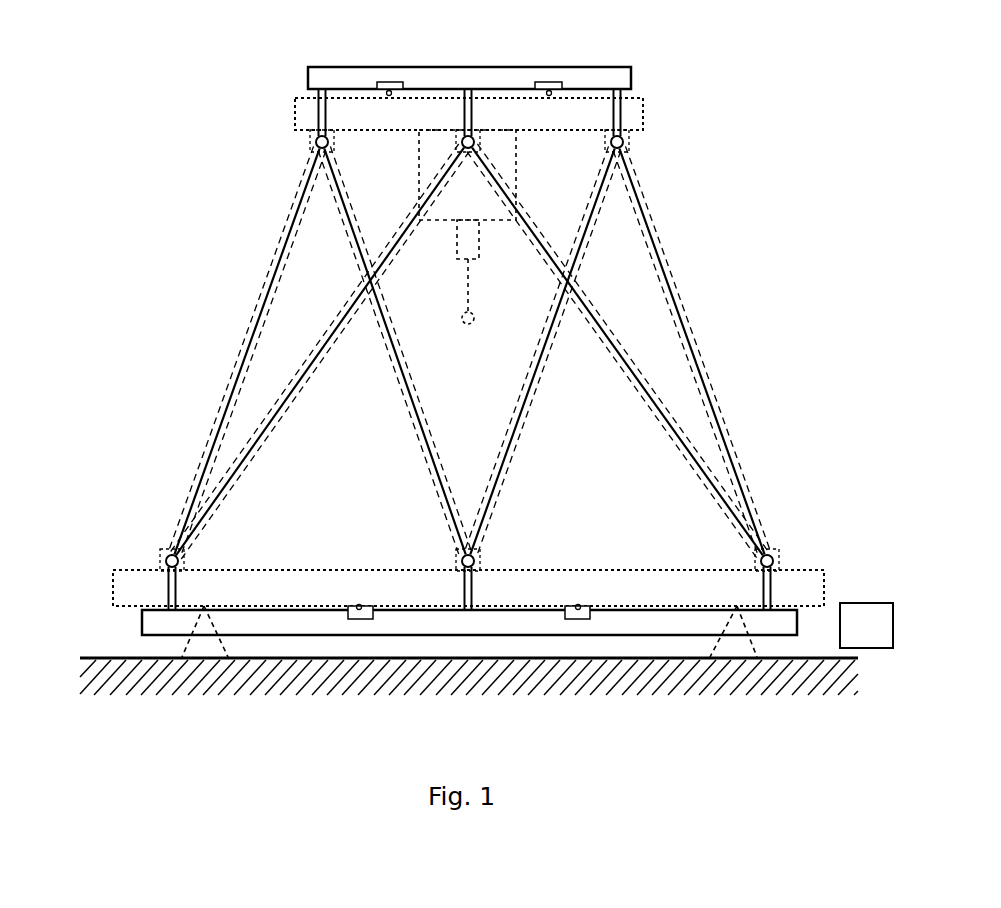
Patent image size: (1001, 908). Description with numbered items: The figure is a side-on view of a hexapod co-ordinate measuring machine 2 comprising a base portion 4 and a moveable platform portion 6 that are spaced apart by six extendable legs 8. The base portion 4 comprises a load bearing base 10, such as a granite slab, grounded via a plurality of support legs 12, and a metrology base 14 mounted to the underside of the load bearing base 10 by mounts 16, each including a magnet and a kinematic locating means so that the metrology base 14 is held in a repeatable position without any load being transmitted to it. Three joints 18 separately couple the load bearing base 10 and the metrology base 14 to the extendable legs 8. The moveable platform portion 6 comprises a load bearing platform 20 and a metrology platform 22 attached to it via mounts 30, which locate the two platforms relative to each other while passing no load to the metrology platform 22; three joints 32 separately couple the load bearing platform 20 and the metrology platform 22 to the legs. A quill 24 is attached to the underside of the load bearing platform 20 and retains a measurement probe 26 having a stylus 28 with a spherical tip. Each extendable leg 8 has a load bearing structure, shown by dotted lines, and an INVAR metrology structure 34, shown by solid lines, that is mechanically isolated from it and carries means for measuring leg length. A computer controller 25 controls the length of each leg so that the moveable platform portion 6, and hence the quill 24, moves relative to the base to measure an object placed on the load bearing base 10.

The hexapod co-ordinate measuring machine 2 is at (712, 74).
The base portion 4 is at (108, 550).
The moveable platform portion 6 is at (270, 67).
The extendable legs 8 is at (210, 418).
The load bearing base 10 is at (622, 600).
The support legs 12 is at (207, 648).
The metrology base 14 is at (645, 636).
The mounts 16 is at (345, 621).
The joints 18 is at (186, 561).
The load bearing platform 20 is at (428, 127).
The metrology platform 22 is at (475, 88).
The quill 24 is at (483, 212).
The computer controller 25 is at (824, 606).
The measurement probe 26 is at (479, 245).
The stylus 28 is at (462, 275).
The mounts 30 is at (400, 80).
The joints 32 is at (334, 144).
The metrology structure 34 is at (352, 240).